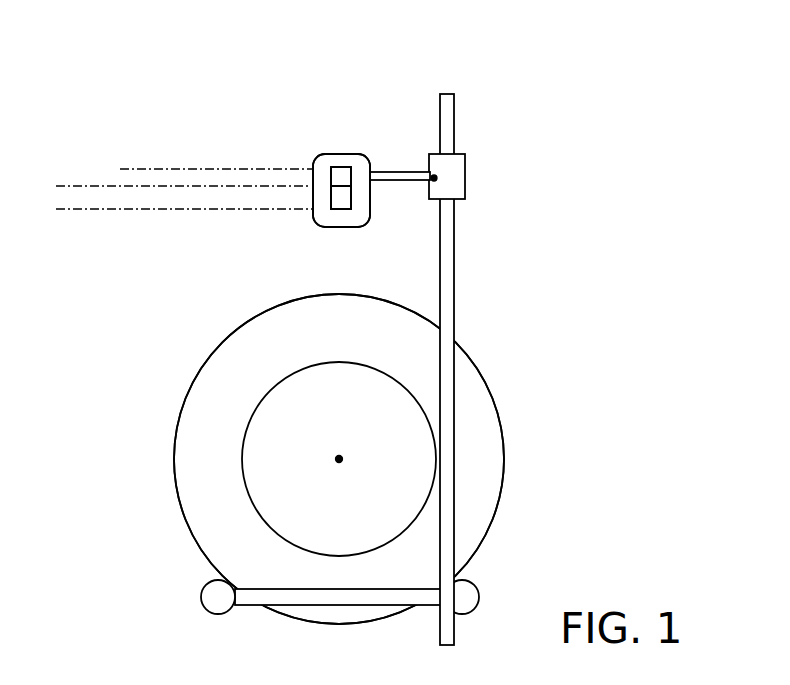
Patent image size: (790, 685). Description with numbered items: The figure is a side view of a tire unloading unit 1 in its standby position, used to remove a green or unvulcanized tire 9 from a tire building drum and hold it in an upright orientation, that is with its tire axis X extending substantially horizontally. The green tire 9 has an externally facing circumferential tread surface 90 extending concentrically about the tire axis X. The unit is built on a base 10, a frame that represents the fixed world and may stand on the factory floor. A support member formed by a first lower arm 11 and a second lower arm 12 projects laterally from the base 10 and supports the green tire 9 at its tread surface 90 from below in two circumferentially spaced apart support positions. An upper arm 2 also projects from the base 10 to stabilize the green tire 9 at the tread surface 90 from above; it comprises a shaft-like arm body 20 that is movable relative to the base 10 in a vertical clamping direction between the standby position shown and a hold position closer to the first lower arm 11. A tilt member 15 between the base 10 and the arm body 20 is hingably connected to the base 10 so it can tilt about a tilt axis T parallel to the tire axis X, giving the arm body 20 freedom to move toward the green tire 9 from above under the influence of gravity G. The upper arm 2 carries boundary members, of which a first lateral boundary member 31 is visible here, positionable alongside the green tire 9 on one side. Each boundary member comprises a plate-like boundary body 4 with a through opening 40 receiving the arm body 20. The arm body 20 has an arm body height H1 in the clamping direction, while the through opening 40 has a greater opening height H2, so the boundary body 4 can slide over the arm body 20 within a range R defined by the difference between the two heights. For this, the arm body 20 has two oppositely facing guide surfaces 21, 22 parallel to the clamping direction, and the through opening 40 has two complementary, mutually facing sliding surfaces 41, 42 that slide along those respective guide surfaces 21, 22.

The tire unloading unit 1 is at (125, 98).
The upper arm 2 is at (343, 97).
The boundary body 4 is at (318, 177).
The green tire 9 is at (200, 443).
The tread surface 90 is at (212, 353).
The base 10 is at (447, 243).
The first lower arm 11 is at (218, 597).
The second lower arm 12 is at (457, 597).
The tilt member 15 is at (397, 181).
The arm body 20 is at (337, 167).
The guide surface 21 is at (327, 188).
The guide surface 22 is at (363, 155).
The first lateral boundary member 31 is at (312, 190).
The through opening 40 is at (340, 203).
The sliding surface 41 is at (330, 185).
The sliding surface 42 is at (352, 195).
The tire axis X is at (345, 455).
The tilt axis T is at (436, 177).
The gravity G is at (509, 183).
The range R is at (79, 253).
The arm body height H1 is at (192, 228).
The opening height H2 is at (139, 128).